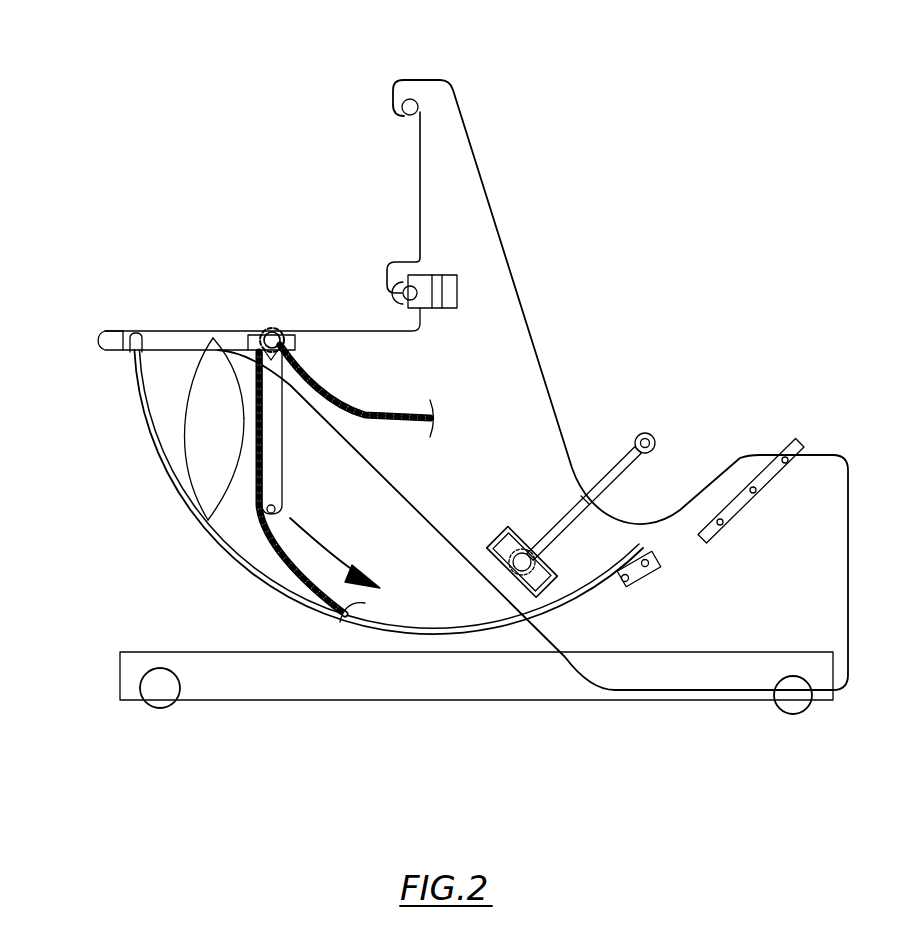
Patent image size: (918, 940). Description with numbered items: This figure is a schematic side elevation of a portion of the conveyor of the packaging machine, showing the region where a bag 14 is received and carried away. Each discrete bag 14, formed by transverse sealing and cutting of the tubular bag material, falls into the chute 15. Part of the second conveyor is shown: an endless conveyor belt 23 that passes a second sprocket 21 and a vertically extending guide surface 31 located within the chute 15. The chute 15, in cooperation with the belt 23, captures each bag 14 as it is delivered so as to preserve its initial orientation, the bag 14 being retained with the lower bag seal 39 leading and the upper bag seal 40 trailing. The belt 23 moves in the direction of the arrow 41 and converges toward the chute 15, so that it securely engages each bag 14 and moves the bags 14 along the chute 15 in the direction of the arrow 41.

The bag 14 is at (178, 455).
The chute 15 is at (140, 397).
The second sprocket 21 is at (282, 326).
The belt 23 is at (363, 402).
The guide surface 31 is at (280, 430).
The lower bag seal 39 is at (213, 517).
The upper bag seal 40 is at (213, 338).
The arrow 41 is at (362, 570).